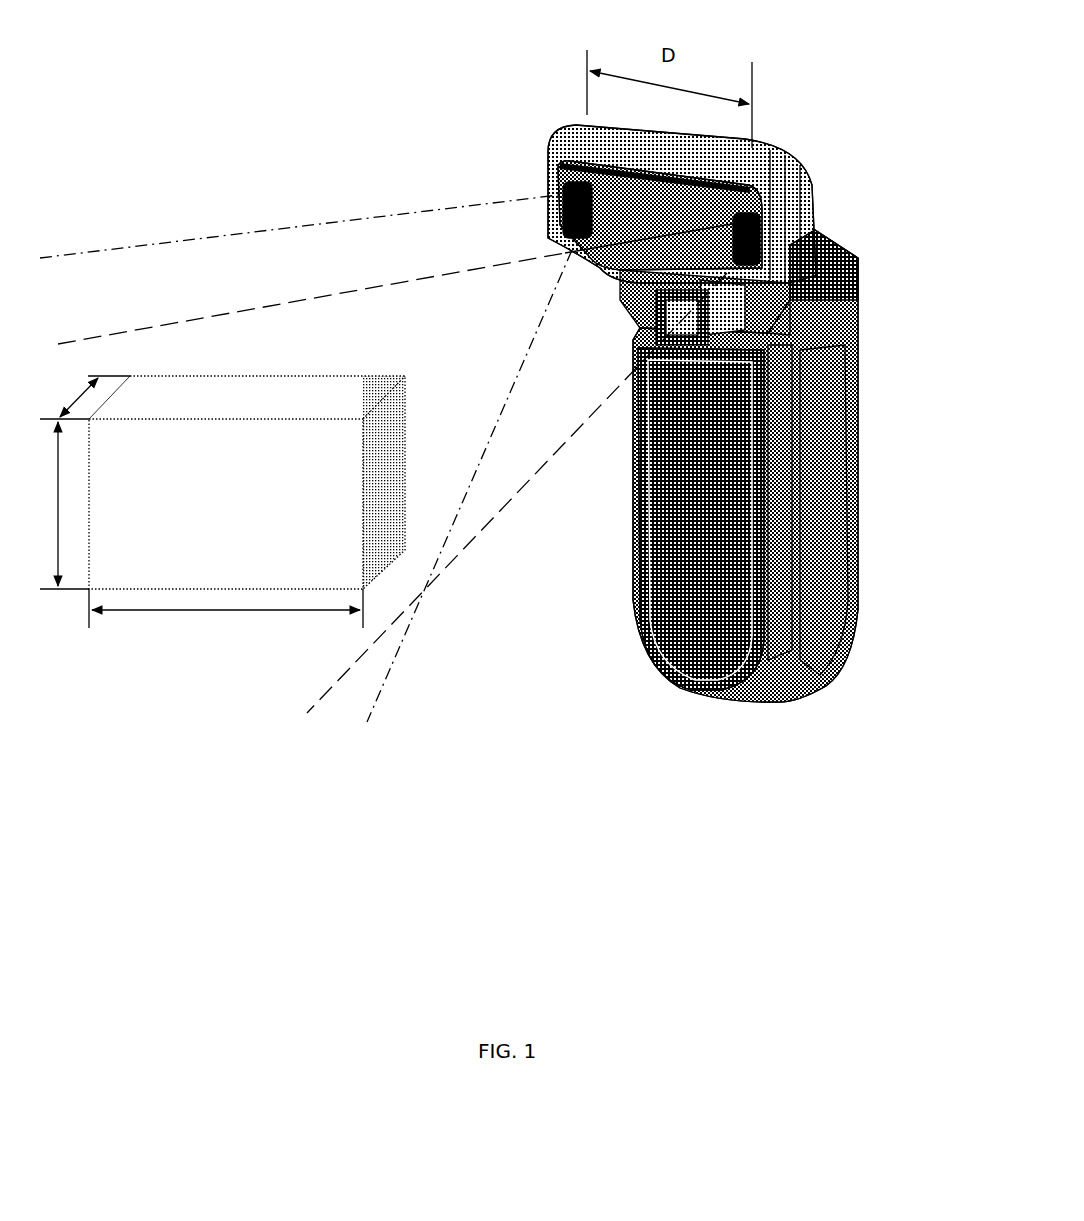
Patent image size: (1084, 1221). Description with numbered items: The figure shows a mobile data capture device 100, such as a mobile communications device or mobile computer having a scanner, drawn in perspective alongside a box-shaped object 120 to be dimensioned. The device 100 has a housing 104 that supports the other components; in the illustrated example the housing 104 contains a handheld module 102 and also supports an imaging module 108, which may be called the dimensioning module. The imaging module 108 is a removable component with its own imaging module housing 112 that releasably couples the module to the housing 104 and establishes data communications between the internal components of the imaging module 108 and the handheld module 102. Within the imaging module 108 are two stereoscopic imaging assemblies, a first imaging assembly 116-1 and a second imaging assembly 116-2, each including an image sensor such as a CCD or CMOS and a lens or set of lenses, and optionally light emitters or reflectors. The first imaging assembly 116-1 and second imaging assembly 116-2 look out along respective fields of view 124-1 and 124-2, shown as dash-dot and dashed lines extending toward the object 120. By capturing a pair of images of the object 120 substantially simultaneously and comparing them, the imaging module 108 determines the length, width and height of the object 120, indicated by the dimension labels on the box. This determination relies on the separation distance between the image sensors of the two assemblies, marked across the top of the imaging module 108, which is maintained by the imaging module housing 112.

The data capture device 100 is at (716, 717).
The handheld module 102 is at (812, 458).
The housing 104 is at (634, 548).
The imaging module 108 is at (810, 155).
The imaging module housing 112 is at (575, 136).
The first imaging assembly 116-1 is at (573, 185).
The second imaging assembly 116-2 is at (745, 238).
The object 120 is at (246, 516).
The field of view of the first imaging assembly 124-1 is at (165, 245).
The field of view of the second imaging assembly 124-2 is at (297, 723).